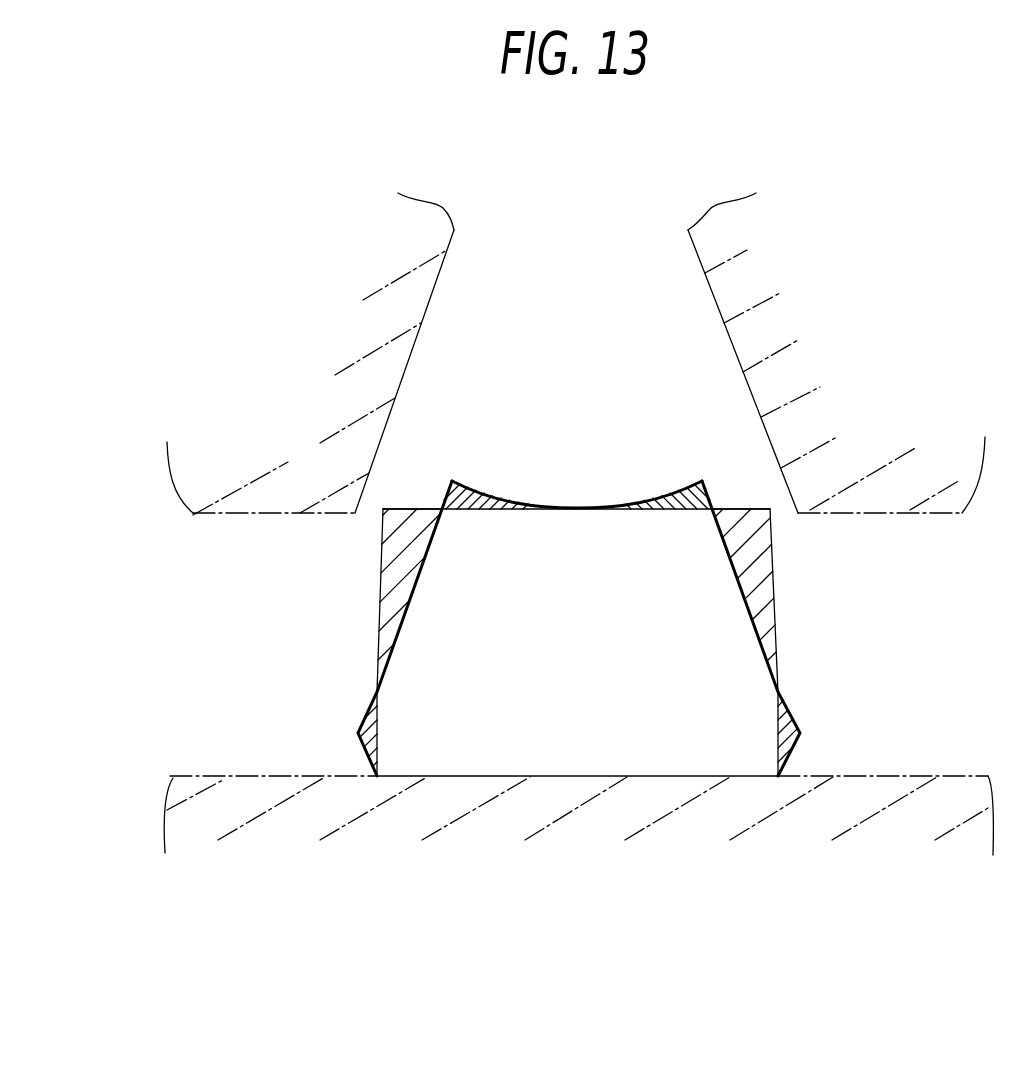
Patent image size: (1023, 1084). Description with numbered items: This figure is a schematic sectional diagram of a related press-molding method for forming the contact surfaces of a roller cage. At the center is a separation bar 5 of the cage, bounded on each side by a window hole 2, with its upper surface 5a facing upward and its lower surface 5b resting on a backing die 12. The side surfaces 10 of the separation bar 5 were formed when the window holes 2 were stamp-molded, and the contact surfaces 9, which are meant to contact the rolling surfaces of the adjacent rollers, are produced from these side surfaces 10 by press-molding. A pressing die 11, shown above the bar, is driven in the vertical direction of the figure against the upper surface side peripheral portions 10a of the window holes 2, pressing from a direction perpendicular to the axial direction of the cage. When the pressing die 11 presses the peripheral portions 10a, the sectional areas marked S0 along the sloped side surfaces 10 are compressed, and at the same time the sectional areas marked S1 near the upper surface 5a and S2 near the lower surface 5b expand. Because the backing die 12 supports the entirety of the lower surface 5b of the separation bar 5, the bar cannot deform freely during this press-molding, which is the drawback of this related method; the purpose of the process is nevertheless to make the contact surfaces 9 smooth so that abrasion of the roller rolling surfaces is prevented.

The window hole 2 is at (262, 652).
The separation bar 5 is at (579, 651).
The upper surface 5a is at (576, 506).
The lower surface 5b is at (575, 777).
The contact surface 9 is at (400, 609).
The side surface 10 is at (579, 563).
The upper surface side peripheral portion 10a is at (406, 520).
The pressing die 11 is at (430, 307).
The backing die 12 is at (925, 773).
The pressed portion S0 is at (420, 541).
The expanded portion S1 is at (477, 483).
The expanded portion S2 is at (352, 728).